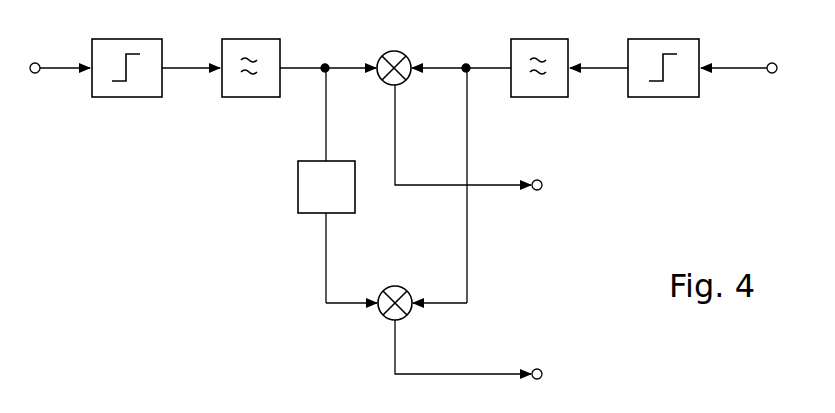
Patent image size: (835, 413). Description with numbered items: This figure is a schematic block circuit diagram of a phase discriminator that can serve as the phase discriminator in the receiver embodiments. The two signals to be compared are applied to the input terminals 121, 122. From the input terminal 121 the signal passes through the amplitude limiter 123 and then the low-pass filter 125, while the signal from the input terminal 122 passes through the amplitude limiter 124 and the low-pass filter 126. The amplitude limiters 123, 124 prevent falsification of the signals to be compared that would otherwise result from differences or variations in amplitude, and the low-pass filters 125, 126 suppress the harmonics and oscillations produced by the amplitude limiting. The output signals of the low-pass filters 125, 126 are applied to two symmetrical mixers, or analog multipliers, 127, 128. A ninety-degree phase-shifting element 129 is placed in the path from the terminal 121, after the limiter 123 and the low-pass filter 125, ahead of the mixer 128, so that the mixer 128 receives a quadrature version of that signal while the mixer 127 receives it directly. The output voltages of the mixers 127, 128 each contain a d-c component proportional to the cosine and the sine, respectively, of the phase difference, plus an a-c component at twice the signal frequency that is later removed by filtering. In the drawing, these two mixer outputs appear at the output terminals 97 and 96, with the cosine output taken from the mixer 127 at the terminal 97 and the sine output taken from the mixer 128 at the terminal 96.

The input terminal 121 is at (60, 54).
The input terminal 122 is at (741, 54).
The amplitude limiter 123 is at (127, 55).
The amplitude limiter 124 is at (663, 55).
The low-pass filter 125 is at (251, 55).
The low-pass filter 126 is at (540, 55).
The symmetrical mixer 127 is at (409, 58).
The symmetrical mixer 128 is at (411, 294).
The 90° phase-shifting element 129 is at (306, 186).
The first output terminal 97 is at (484, 141).
The second output terminal 96 is at (484, 354).